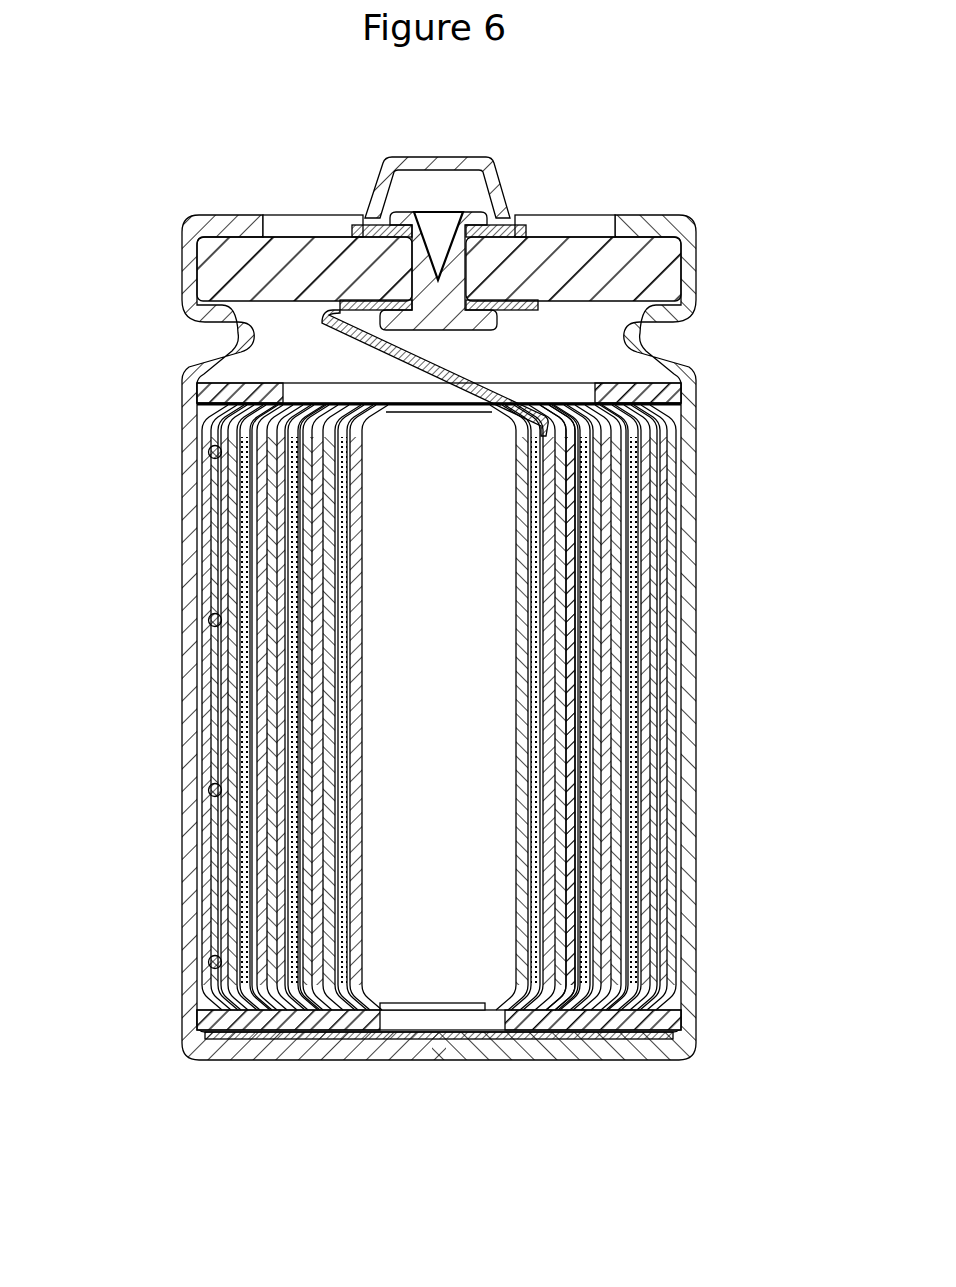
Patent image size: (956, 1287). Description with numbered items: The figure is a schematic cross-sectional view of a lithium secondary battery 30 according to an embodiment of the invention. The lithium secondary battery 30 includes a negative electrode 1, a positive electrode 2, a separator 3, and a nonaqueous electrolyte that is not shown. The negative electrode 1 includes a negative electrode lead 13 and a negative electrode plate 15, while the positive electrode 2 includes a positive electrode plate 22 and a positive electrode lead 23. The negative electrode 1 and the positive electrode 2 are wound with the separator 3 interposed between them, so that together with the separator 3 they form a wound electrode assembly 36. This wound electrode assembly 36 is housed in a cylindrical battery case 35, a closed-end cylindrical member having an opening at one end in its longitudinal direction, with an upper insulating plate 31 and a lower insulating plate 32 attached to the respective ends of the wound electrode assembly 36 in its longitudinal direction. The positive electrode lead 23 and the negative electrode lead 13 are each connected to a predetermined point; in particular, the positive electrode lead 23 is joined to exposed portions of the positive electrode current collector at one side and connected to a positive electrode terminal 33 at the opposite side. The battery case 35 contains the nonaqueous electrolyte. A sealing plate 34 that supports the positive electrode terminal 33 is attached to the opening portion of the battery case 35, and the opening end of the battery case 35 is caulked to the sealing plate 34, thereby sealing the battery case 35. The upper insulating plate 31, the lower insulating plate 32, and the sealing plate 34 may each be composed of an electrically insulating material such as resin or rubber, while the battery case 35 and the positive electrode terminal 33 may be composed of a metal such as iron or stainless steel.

The negative electrode 1 is at (97, 437).
The negative electrode lead 13 is at (208, 480).
The negative electrode plate 15 is at (208, 527).
The positive electrode 2 is at (483, 522).
The positive electrode plate 22 is at (573, 485).
The positive electrode lead 23 is at (447, 377).
The separator 3 is at (667, 485).
The lithium secondary battery 30 is at (188, 173).
The upper insulating plate 31 is at (622, 383).
The lower insulating plate 32 is at (626, 1032).
The positive electrode terminal 33 is at (444, 157).
The sealing plate 34 is at (594, 232).
The battery case 35 is at (697, 628).
The wound electrode assembly 36 is at (683, 529).